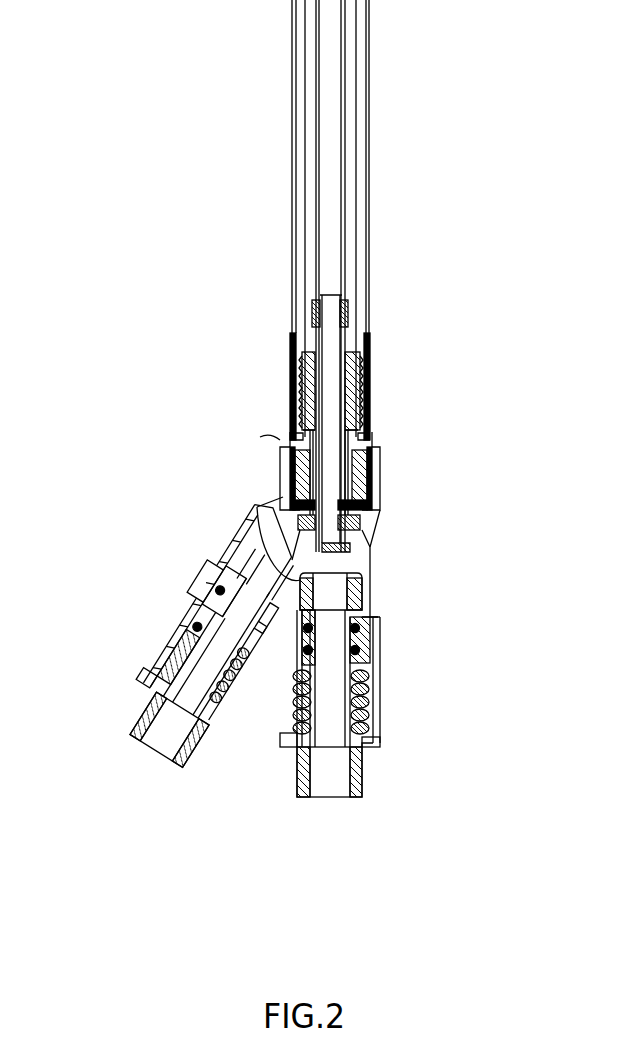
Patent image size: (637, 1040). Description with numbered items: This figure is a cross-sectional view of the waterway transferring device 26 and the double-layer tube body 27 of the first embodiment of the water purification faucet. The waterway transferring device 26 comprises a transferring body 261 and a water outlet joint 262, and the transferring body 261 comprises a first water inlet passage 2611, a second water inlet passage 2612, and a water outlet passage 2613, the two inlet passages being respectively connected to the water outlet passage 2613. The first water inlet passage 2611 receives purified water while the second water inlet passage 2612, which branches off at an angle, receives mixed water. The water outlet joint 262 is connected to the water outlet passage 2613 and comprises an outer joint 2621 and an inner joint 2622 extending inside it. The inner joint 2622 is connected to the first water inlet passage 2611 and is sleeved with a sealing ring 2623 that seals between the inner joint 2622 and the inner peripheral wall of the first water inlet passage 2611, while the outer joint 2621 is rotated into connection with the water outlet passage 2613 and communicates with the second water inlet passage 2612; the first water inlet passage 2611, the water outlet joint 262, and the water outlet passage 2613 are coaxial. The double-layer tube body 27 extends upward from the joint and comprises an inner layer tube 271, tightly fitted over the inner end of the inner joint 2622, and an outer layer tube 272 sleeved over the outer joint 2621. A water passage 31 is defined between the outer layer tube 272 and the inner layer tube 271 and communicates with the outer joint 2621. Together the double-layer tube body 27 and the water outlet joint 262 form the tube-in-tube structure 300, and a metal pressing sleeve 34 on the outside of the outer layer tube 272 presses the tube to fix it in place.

The double-layer tube body 27 is at (283, 135).
The inner layer tube 271 is at (317, 228).
The outer layer tube 272 is at (363, 252).
The water passage 31 is at (350, 203).
The tube-in-tube structure 300 is at (333, 133).
The pressing sleeve 34 is at (370, 370).
The waterway transferring device 26 is at (402, 550).
The transferring body 261 is at (257, 507).
The water outlet joint 262 is at (318, 412).
The outer joint 2621 is at (288, 447).
The water outlet passage 2613 is at (373, 517).
The inner joint 2622 is at (352, 586).
The first water inlet passage 2611 is at (345, 592).
The second water inlet passage 2612 is at (260, 547).
The sealing ring 2623 is at (245, 586).